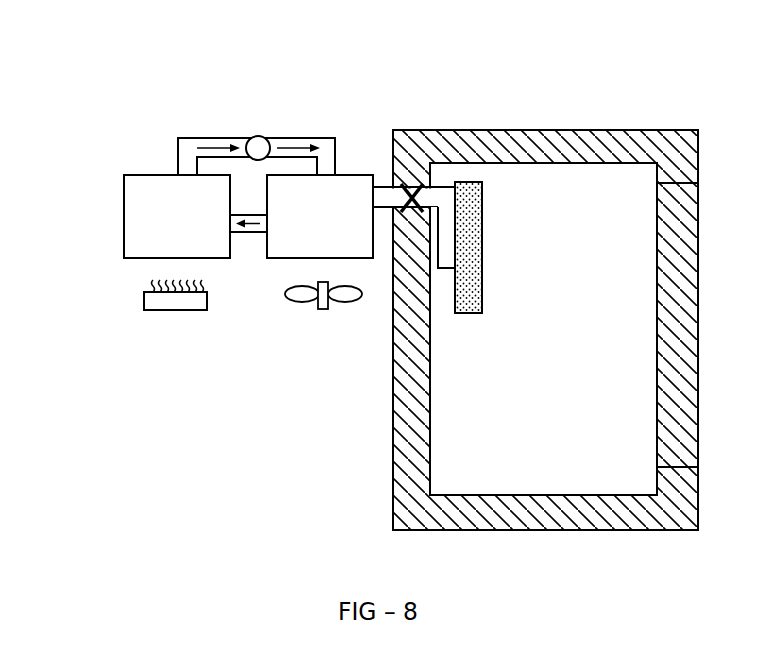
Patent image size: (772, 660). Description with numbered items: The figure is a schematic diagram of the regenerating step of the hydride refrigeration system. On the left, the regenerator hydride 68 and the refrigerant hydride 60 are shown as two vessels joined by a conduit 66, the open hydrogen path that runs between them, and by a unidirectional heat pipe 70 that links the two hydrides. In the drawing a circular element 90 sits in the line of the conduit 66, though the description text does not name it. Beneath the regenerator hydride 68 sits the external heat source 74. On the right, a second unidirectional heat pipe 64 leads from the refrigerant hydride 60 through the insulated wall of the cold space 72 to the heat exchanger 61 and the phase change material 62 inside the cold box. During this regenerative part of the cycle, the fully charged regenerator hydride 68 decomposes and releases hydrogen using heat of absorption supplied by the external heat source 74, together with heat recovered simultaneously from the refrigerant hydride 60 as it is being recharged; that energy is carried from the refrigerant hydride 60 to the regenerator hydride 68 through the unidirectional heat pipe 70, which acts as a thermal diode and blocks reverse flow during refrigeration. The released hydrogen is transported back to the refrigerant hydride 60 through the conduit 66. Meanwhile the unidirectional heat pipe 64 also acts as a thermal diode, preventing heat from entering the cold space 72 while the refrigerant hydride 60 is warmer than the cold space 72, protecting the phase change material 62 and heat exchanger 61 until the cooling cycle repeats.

The refrigerant hydride 60 is at (355, 188).
The heat exchanger 61 is at (447, 247).
The phase change material 62 is at (472, 267).
The unidirectional heat pipe 64 is at (387, 202).
The conduit 66 is at (222, 148).
The regenerator hydride 68 is at (135, 238).
The unidirectional heat pipe 70 is at (247, 233).
The cold space 72 is at (578, 187).
The external heat source 74 is at (163, 310).
The pump 90 is at (292, 148).